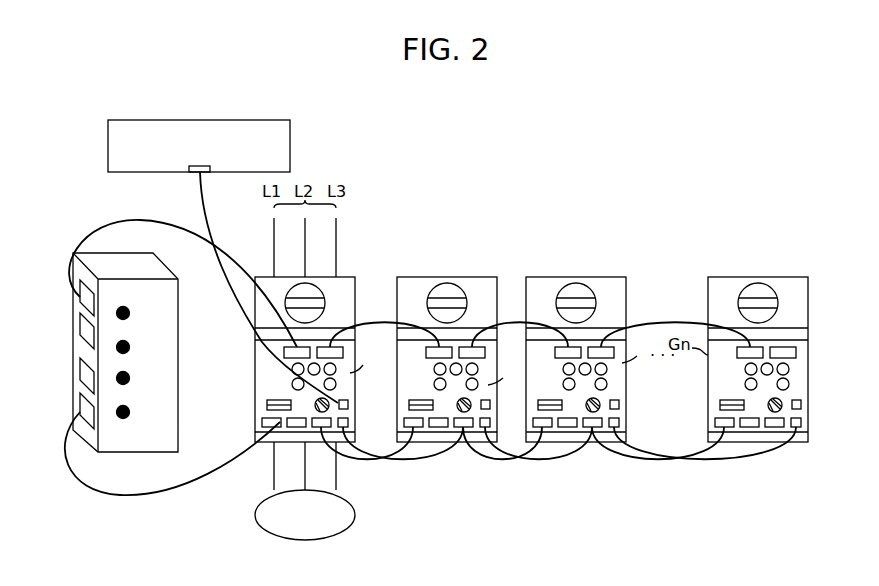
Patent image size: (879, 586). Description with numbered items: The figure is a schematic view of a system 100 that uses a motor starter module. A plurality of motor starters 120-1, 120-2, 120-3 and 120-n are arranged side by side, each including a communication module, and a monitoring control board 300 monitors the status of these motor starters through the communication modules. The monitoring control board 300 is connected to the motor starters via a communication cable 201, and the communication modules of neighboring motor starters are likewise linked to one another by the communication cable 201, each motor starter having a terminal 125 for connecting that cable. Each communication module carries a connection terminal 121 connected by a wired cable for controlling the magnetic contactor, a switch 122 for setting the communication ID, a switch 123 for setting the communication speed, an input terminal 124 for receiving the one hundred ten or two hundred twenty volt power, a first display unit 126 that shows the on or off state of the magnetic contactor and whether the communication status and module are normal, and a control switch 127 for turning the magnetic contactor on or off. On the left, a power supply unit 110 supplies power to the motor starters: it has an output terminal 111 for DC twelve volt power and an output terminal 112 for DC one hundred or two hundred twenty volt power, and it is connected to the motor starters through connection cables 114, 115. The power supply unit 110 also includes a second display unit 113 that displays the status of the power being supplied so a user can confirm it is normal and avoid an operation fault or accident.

The system 100 is at (565, 160).
The power supply unit 110 is at (126, 343).
The output terminal 111 is at (80, 324).
The output terminal 112 is at (80, 404).
The second display unit 113 is at (160, 313).
The first cable 114 is at (130, 216).
The connection cable 115 is at (133, 494).
The motor starter 120-1 is at (310, 388).
The motor starter 120-2 is at (448, 277).
The motor starter 120-3 is at (603, 340).
The motor starter 120-n is at (738, 339).
The connection terminal 121 is at (262, 421).
The switch 122 is at (316, 401).
The switch 123 is at (267, 404).
The input terminal 124 is at (318, 428).
The terminal 125 is at (348, 405).
The first display unit 126 is at (575, 372).
The control switch 127 is at (607, 388).
The communication cable 201 is at (233, 306).
The monitoring control board 300 is at (291, 131).